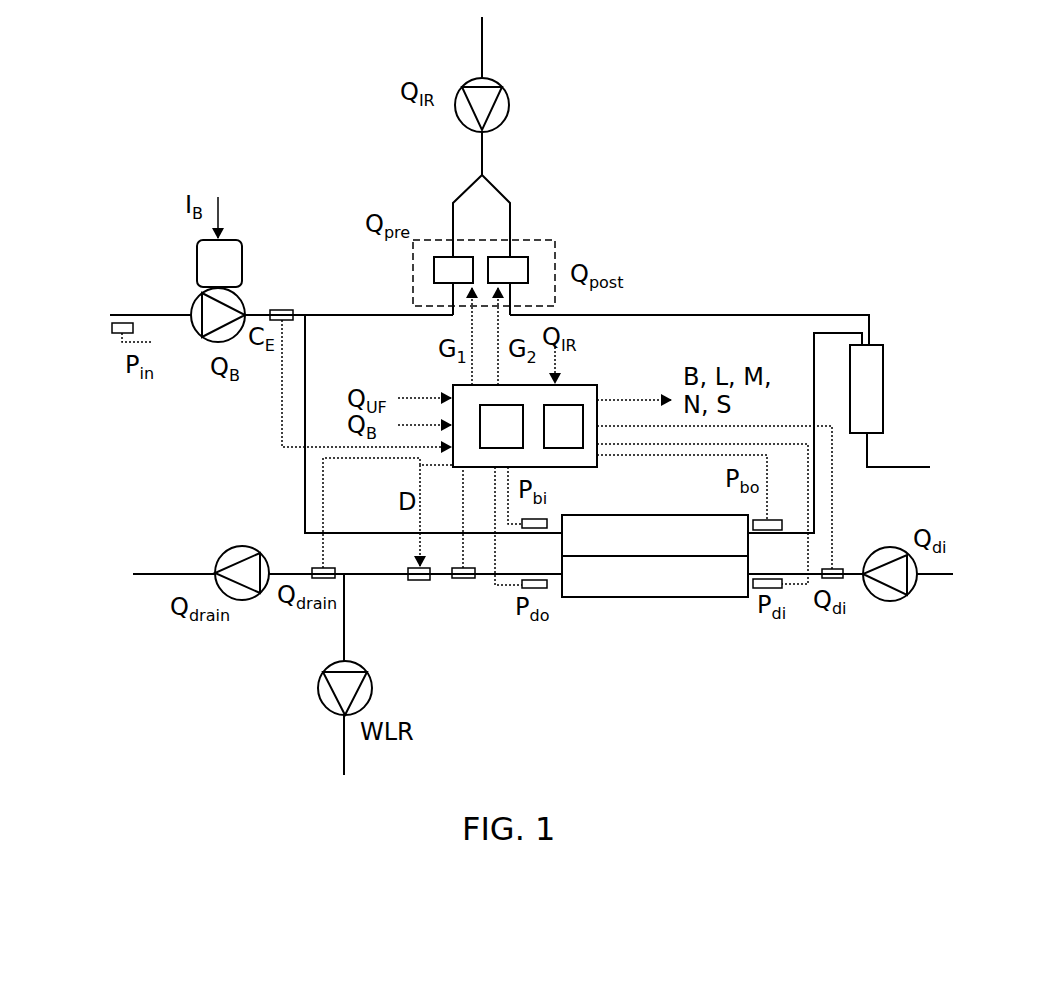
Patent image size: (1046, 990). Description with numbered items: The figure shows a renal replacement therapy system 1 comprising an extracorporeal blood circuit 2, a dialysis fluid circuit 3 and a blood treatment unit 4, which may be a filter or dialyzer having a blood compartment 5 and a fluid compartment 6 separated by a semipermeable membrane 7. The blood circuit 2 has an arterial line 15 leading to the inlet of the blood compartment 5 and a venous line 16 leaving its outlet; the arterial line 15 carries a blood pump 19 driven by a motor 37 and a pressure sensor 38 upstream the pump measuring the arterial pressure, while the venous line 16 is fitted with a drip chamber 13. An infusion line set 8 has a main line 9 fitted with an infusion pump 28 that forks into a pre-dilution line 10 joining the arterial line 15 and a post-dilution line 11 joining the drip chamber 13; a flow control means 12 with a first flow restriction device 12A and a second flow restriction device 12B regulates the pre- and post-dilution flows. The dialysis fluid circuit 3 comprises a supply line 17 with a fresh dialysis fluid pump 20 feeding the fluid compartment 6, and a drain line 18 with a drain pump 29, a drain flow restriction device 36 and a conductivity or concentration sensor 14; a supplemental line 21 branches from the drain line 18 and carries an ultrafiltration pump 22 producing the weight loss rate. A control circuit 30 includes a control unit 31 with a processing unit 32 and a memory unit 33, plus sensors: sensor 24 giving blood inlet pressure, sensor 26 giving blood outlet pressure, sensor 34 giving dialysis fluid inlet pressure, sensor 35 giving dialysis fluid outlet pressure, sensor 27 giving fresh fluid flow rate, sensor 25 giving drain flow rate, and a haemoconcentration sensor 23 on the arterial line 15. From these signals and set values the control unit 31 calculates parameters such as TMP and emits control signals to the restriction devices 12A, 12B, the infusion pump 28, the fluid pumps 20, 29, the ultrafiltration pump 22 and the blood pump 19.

The renal replacement therapy system 1 is at (218, 688).
The extracorporeal blood circuit 2 is at (245, 468).
The dialysis fluid circuit 3 is at (752, 643).
The blood treatment unit 4 is at (642, 597).
The blood compartment 5 is at (613, 520).
The fluid compartment 6 is at (682, 587).
The semipermeable membrane 7 is at (737, 555).
The infusion line set 8 is at (577, 147).
The main line 9 is at (482, 57).
The pre-dilution line 10 is at (388, 315).
The post-dilution line 11 is at (767, 315).
The flow control means 12 is at (555, 240).
The first flow restriction device 12A is at (435, 257).
The second flow restriction device 12B is at (516, 257).
The drip chamber 13 is at (883, 362).
The sensor 14 is at (468, 580).
The arterial line 15 is at (260, 313).
The venous line 16 is at (887, 467).
The supply line 17 is at (943, 577).
The drain line 18 is at (378, 577).
The blood pump 19 is at (192, 308).
The fresh dialysis fluid pump 20 is at (903, 545).
The supplemental line 21 is at (343, 618).
The ultrafiltration pump 22 is at (372, 683).
The haemoconcentration sensor 23 is at (293, 310).
The sensor 24 is at (547, 523).
The sensor 25 is at (313, 570).
The sensor 26 is at (775, 520).
The sensor 27 is at (840, 580).
The infusion pump 28 is at (508, 100).
The drain pump 29 is at (223, 557).
The control circuit 30 is at (445, 383).
The control unit 31 is at (597, 385).
The processing unit 32 is at (501, 426).
The memory unit 33 is at (563, 426).
The sensor 34 is at (780, 587).
The sensor 35 is at (547, 587).
The drain flow restriction device 36 is at (428, 580).
The motor 37 is at (235, 245).
The pressure sensor 38 is at (110, 327).